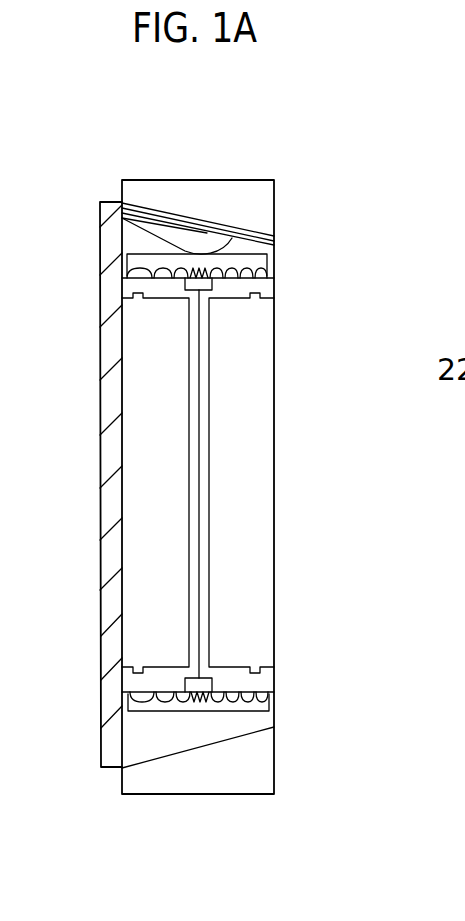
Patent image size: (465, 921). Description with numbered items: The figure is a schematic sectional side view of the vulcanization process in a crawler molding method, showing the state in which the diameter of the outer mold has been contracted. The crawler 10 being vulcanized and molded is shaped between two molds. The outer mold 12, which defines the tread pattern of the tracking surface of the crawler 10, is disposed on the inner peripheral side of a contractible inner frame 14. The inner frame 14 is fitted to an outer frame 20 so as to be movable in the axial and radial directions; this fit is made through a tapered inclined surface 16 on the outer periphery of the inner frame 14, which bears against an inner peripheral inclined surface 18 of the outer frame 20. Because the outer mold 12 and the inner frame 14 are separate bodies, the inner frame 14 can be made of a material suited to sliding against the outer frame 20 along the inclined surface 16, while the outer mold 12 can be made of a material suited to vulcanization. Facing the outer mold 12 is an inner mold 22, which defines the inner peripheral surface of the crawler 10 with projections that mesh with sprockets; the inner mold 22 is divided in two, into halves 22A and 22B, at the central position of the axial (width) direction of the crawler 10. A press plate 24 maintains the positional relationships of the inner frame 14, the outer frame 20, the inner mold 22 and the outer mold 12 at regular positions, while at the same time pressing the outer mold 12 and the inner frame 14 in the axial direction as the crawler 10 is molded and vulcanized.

The crawler 10 is at (253, 275).
The outer mold 12 is at (266, 262).
The inner frame 14 is at (137, 245).
The inclined surface 16 is at (192, 216).
The inner peripheral inclined surface 18 is at (136, 227).
The outer frame 20 is at (258, 210).
The inner mold 22 is at (383, 530).
The inner mold half 22A is at (158, 676).
The inner mold half 22B is at (228, 676).
The press plate 24 is at (114, 450).